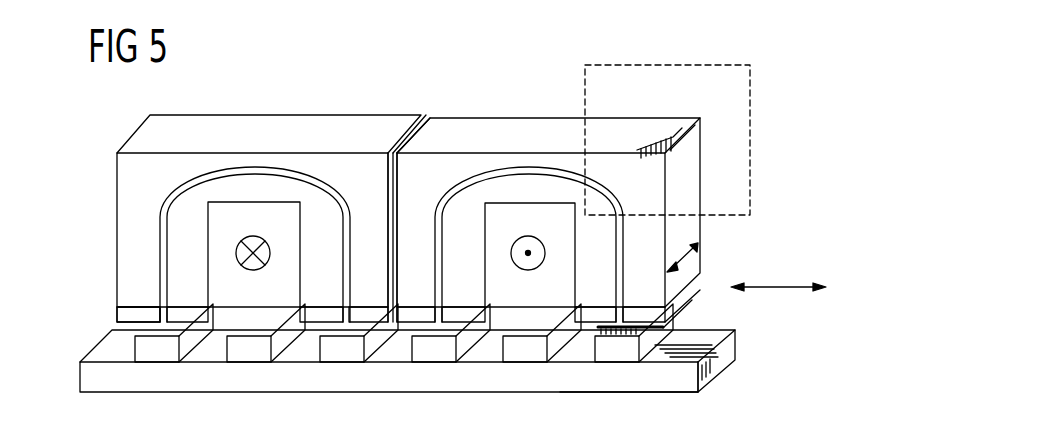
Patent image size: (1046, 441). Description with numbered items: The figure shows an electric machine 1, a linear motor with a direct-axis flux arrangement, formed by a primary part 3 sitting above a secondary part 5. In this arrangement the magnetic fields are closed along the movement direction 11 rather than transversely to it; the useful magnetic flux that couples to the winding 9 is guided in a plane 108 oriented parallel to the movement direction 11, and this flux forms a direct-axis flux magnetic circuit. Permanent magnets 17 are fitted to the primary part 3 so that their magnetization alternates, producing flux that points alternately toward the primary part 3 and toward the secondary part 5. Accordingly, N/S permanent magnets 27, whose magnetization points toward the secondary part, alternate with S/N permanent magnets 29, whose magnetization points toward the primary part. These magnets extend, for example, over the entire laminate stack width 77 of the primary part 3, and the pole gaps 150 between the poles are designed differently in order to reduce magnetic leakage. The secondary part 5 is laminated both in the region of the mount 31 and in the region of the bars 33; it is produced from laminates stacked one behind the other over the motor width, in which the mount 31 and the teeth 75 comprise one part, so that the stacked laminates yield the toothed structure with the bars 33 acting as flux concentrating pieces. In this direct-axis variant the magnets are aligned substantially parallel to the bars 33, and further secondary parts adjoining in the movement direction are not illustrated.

The electric machine 1 is at (80, 133).
The primary part 3 is at (534, 129).
The secondary part 5 is at (723, 357).
The winding 9 is at (291, 218).
The movement direction 11 is at (777, 285).
The permanent magnets 17 is at (172, 337).
The N/S permanent magnets 27 is at (186, 311).
The S/N permanent magnets 29 is at (135, 311).
The mount 31 is at (668, 380).
The bars 33 is at (671, 326).
The teeth 75 is at (435, 348).
The laminate stack width 77 is at (682, 258).
The plane 108 is at (750, 141).
The pole gaps 150 is at (412, 120).